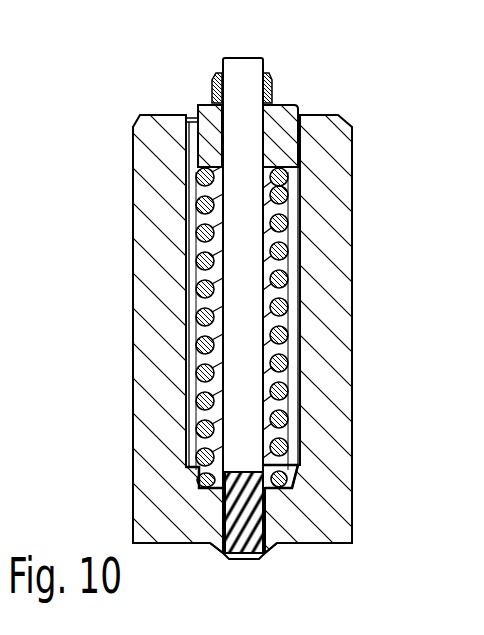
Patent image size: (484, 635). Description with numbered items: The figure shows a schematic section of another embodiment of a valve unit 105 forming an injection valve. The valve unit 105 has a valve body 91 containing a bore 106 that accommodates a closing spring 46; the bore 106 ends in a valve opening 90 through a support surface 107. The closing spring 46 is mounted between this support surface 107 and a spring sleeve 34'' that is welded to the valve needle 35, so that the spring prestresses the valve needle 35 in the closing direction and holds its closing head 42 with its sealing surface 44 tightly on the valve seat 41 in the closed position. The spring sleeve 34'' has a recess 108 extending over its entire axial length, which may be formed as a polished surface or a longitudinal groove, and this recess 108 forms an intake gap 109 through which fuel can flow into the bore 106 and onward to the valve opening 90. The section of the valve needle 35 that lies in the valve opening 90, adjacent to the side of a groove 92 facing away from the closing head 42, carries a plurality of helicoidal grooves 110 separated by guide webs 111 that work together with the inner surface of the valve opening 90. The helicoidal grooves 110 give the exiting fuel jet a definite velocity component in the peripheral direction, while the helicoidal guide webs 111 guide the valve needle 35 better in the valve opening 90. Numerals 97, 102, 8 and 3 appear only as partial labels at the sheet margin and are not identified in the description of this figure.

The valve body 91 is at (320, 303).
The intake gap 109 is at (192, 162).
The recess 108 is at (160, 115).
The spring sleeve 34'' is at (346, 116).
The valve needle 35 is at (242, 107).
The closing spring 46 is at (290, 362).
The bore 106 is at (288, 182).
The helicoidal grooves 110 is at (282, 481).
The support surface 107 is at (198, 472).
The valve opening 90 is at (228, 496).
The valve seat 41 is at (225, 551).
The groove 92 is at (232, 558).
The closing head 42 is at (250, 558).
The sealing surface 44 is at (282, 547).
The guide webs 111 is at (266, 533).
The valve unit 105 is at (312, 109).
The housing 97 is at (18, 279).
The channel 102 is at (0, 361).
The partial numeral 8 is at (4, 164).
The partial numeral 3 is at (3, 449).